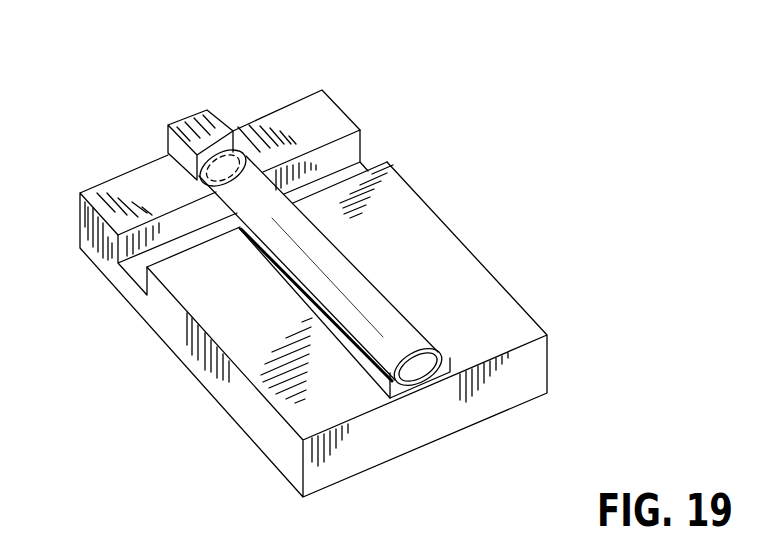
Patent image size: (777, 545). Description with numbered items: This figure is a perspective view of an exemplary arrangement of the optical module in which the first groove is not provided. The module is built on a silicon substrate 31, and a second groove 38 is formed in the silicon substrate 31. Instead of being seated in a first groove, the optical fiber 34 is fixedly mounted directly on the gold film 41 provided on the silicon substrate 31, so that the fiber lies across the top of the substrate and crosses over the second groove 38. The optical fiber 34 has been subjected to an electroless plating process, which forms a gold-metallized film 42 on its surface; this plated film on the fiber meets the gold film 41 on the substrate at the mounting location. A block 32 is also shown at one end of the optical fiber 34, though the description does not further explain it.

The silicon substrate 31 is at (543, 373).
The clamp block 32 is at (203, 130).
The optical fiber 34 is at (417, 373).
The second groove 38 is at (147, 268).
The gold film 41 is at (440, 375).
The gold-metallized film 42 is at (423, 347).